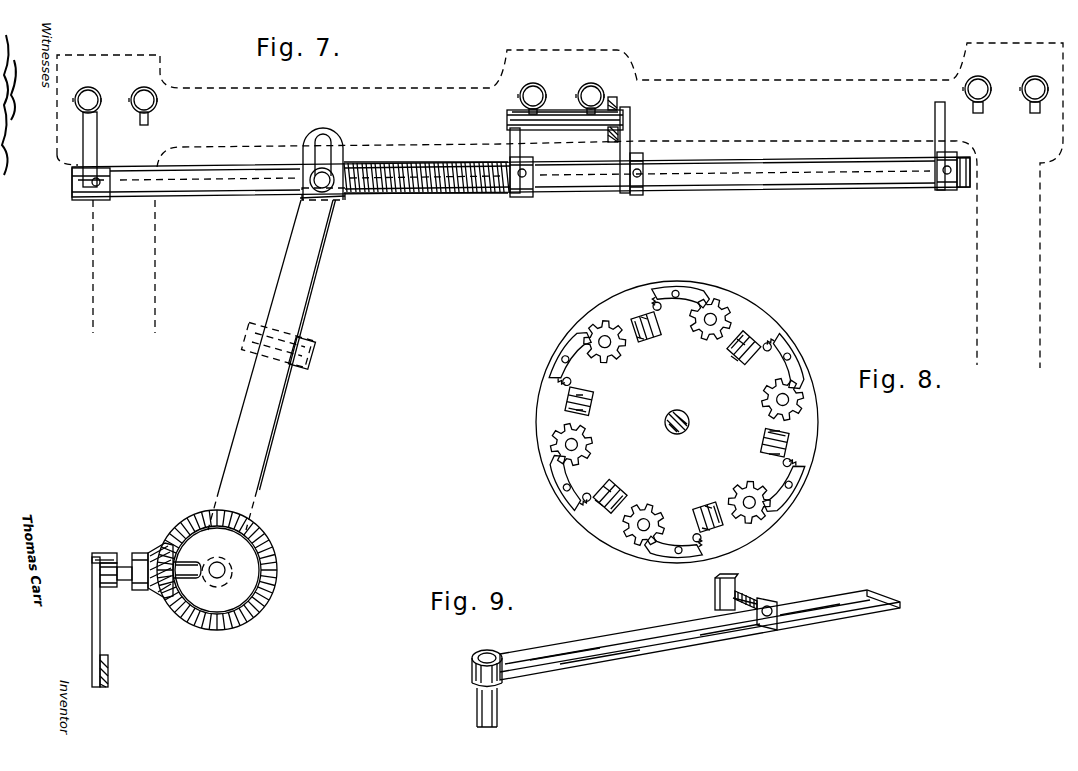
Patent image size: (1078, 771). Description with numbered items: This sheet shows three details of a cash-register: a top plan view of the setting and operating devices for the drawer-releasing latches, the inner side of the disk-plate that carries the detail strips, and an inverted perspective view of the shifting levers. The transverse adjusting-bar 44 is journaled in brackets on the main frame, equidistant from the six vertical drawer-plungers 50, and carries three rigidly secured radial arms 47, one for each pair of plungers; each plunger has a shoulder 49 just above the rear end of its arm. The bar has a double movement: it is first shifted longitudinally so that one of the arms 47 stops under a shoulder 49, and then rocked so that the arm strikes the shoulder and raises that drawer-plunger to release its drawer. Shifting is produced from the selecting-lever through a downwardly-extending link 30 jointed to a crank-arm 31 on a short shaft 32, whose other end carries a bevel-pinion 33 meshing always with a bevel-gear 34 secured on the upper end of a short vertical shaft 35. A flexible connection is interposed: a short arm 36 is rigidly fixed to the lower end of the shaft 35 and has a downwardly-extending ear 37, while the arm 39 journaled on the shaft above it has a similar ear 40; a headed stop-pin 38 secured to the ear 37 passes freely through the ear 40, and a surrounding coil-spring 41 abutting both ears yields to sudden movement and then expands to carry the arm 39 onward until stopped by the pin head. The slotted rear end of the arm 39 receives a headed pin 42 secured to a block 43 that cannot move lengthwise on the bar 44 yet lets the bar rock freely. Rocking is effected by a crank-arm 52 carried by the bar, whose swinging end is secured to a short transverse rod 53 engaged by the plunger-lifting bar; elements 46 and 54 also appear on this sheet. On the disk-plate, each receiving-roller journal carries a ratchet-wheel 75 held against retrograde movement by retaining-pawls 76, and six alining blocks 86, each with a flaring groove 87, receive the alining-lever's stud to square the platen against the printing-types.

In FIG. 7, the link 30 is at (110, 672).
In FIG. 7, the crank-arm 31 is at (102, 627).
In FIG. 7, the short shaft 32 is at (123, 562).
In FIG. 7, the bevel-pinion 33 is at (153, 543).
In FIG. 7, the bevel-gear 34 is at (278, 578).
In FIG. 7, the short vertical shaft 35 is at (230, 568).
In FIG. 9, the short vertical shaft 35 is at (500, 702).
In FIG. 9, the short arm 36 is at (553, 647).
In FIG. 9, the ear 37 is at (777, 602).
In FIG. 9, the stop-pin 38 is at (753, 597).
In FIG. 7, the arm 39 is at (268, 405).
In FIG. 9, the arm 39 is at (677, 653).
In FIG. 8, the ear 40 is at (677, 410).
In FIG. 9, the ear 40 is at (735, 578).
In FIG. 7, the coil-spring 41 is at (323, 145).
In FIG. 9, the coil-spring 41 is at (733, 603).
In FIG. 7, the pin 42 is at (337, 197).
In FIG. 7, the block 43 is at (300, 199).
In FIG. 7, the adjusting-bar 44 is at (215, 171).
In FIG. 7, the spring 46 is at (470, 193).
In FIG. 7, the radial arms 47 is at (97, 135).
In FIG. 7, the shoulder 49 is at (98, 117).
In FIG. 7, the drawer-plungers 50 is at (150, 97).
In FIG. 7, the crank-arm 52 is at (637, 127).
In FIG. 7, the short transverse rod 53 is at (553, 112).
In FIG. 7, the block 54 is at (620, 97).
In FIG. 8, the ratchet-wheel 75 is at (603, 335).
In FIG. 8, the retaining-pawls 76 is at (562, 342).
In FIG. 8, the alining blocks 86 is at (638, 340).
In FIG. 8, the flaring groove 87 is at (643, 327).